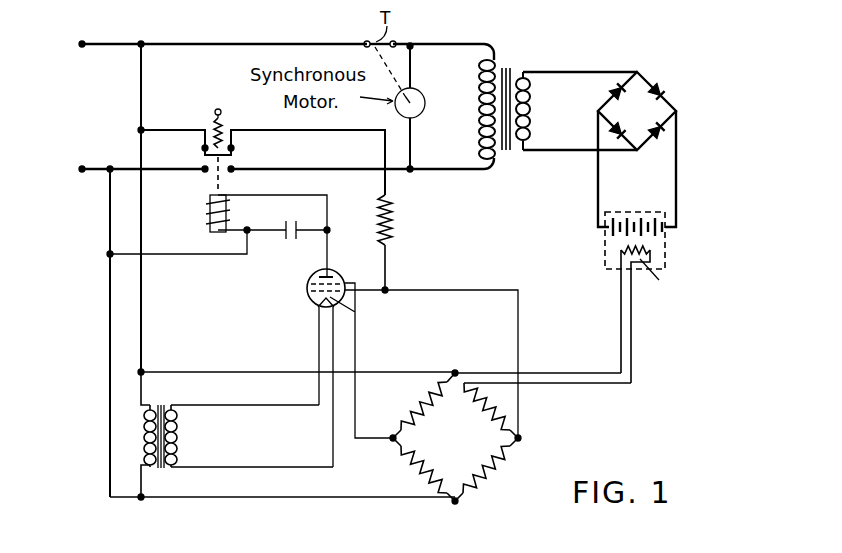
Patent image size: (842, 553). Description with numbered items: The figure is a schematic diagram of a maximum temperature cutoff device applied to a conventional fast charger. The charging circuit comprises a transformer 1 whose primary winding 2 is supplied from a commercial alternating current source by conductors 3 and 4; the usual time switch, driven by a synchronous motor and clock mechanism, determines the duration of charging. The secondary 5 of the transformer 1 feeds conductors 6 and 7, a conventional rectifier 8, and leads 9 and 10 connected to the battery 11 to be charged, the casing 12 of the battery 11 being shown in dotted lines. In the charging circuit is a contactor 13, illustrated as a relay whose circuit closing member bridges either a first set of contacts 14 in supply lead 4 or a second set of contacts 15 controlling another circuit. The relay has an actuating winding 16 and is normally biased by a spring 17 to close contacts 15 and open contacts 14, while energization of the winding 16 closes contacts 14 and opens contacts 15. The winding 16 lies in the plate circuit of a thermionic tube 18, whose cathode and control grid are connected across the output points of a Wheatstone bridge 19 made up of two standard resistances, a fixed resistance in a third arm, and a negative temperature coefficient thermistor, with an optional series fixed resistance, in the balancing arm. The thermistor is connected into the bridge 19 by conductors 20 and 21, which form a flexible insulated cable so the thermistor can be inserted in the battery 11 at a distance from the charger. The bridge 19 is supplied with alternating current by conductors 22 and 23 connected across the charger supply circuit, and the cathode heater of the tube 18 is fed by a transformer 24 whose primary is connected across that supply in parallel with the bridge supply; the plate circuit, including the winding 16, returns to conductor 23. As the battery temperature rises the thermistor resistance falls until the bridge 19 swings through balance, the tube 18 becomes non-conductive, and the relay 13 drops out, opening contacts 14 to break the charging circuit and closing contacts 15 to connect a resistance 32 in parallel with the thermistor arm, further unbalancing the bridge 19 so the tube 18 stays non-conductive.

The transformer 1 is at (512, 61).
The primary winding 2 is at (482, 121).
The conductor 3 is at (320, 43).
The conductor 4 is at (417, 169).
The secondary 5 is at (531, 112).
The conductor 6 is at (569, 72).
The conductor 7 is at (549, 150).
The rectifier 8 is at (637, 111).
The lead 9 is at (598, 179).
The lead 10 is at (676, 160).
The battery 11 is at (630, 219).
The casing 12 is at (668, 256).
The contactor 13 is at (239, 159).
The first set of contacts 14 is at (204, 171).
The second set of contacts 15 is at (205, 152).
The actuating winding 16 is at (208, 213).
The spring 17 is at (221, 126).
The thermionic tube 18 is at (305, 296).
The Wheatstone bridge 19 is at (460, 437).
The conductor 20 is at (565, 374).
The conductor 21 is at (566, 385).
The conductor 22 is at (188, 372).
The conductor 23 is at (166, 498).
The transformer 24 is at (171, 471).
The resistance 32 is at (392, 228).